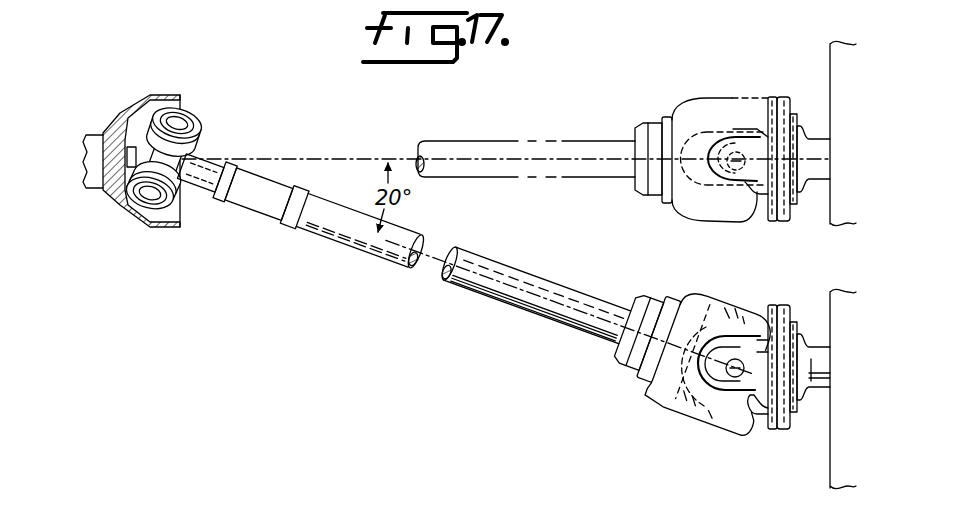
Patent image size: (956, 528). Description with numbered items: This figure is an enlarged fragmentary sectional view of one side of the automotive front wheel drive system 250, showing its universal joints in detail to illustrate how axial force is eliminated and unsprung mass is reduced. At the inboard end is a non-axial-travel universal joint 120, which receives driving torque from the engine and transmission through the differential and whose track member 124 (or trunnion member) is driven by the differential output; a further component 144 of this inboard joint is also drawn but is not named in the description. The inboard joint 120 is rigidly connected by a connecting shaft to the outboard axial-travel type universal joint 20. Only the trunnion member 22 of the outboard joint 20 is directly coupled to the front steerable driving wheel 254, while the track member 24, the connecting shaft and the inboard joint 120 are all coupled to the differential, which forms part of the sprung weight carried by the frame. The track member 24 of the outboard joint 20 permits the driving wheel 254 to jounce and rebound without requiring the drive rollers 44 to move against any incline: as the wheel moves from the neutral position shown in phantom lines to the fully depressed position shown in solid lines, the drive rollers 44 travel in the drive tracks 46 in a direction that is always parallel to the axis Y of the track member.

The non-axial-travel universal joint 120 is at (186, 88).
The bearing cup 144 is at (210, 117).
The track member 124 is at (160, 224).
The automotive front wheel drive system 250 is at (382, 284).
The axial-travel type universal joint 20 is at (693, 85).
The trunnion member 22 is at (774, 95).
The track member 24 is at (664, 210).
The drive roller 44 is at (725, 188).
The drive track 46 is at (753, 188).
The front steerable driving wheel 254 is at (829, 45).
The axis of the track member Y is at (670, 130).